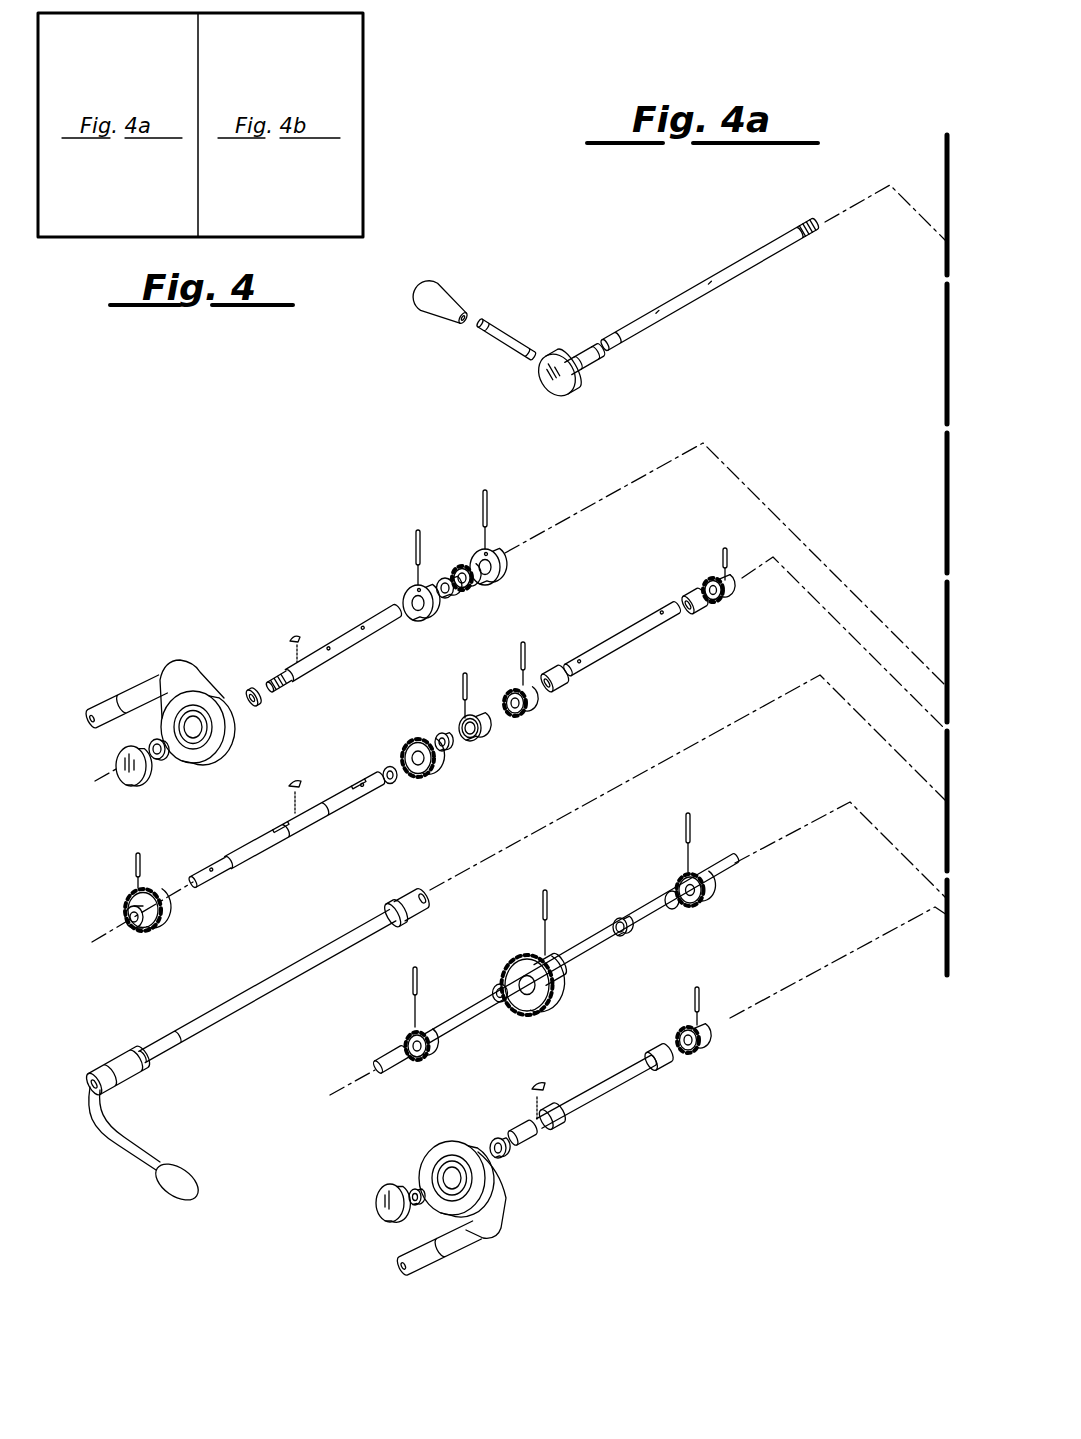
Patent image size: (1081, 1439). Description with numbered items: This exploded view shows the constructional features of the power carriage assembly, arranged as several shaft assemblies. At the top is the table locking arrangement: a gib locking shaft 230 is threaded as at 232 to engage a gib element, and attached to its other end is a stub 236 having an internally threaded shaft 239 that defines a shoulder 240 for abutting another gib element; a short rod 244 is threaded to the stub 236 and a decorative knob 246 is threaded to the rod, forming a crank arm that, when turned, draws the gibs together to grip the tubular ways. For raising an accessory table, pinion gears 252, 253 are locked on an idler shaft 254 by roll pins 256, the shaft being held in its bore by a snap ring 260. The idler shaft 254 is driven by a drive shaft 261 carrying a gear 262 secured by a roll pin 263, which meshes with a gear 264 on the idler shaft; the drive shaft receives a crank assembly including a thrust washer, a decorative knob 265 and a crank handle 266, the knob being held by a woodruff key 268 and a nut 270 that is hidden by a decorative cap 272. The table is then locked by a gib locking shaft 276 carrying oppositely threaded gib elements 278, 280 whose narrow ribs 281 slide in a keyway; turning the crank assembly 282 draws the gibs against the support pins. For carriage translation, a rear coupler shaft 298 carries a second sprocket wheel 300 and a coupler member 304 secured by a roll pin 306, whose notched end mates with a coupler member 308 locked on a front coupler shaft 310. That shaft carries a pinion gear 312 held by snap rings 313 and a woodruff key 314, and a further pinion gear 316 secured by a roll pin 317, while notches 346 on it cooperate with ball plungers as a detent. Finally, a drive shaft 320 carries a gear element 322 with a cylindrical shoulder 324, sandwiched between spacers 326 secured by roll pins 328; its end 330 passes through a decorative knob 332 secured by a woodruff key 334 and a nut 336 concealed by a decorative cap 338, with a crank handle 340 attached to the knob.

In FIG. 4A, the gib locking shaft 230 is at (712, 282).
In FIG. 4A, the threaded portion 232 is at (815, 226).
In FIG. 4A, the stub 236 is at (578, 397).
In FIG. 4A, the internally threaded shaft 239 is at (583, 352).
In FIG. 4A, the shoulder 240 is at (602, 360).
In FIG. 4A, the short rod 244 is at (510, 330).
In FIG. 4A, the decorative knob 246 is at (447, 290).
In FIG. 4, the pinion gear 252 is at (404, 1030).
In FIG. 4, the pinion gear 253 is at (707, 906).
In FIG. 4, the idler shaft 254 is at (592, 937).
In FIG. 4, the roll pins 256 is at (693, 825).
In FIG. 4, the snap ring 260 is at (627, 937).
In FIG. 4, the drive shaft 261 is at (618, 1092).
In FIG. 4, the gear 262 is at (698, 1060).
In FIG. 4, the roll pin 263 is at (703, 997).
In FIG. 4, the gear / thrust washer 264 is at (508, 954).
In FIG. 4, the knob 265 is at (490, 1186).
In FIG. 4, the crank handle 266 is at (441, 1262).
In FIG. 4, the woodruff key 268 is at (540, 1080).
In FIG. 4, the nut 270 is at (414, 1188).
In FIG. 4, the decorative cap 272 is at (379, 1196).
In FIG. 4, the gib locking shaft 276 is at (290, 967).
In FIG. 4, the gib element 278 is at (122, 1052).
In FIG. 4, the gib element 280 is at (408, 896).
In FIG. 4, the narrow rib 281 is at (270, 970).
In FIG. 4, the crank assembly 282 is at (138, 1147).
In FIG. 4, the rear coupler shaft 298 is at (650, 633).
In FIG. 4, the second sprocket wheel 300 is at (725, 606).
In FIG. 4, the coupler member 304 is at (528, 720).
In FIG. 4, the roll pin 306 is at (526, 645).
In FIG. 4, the mating coupler member 308 is at (480, 742).
In FIG. 4, the front coupler shaft 310 is at (368, 793).
In FIG. 4, the pinion gear 312 is at (430, 777).
In FIG. 4, the snap rings 313 is at (440, 733).
In FIG. 4, the woodruff key 314 is at (296, 777).
In FIG. 4, the pinion gear 316 is at (126, 895).
In FIG. 4, the roll pin 317 is at (133, 858).
In FIG. 4, the drive shaft 320 is at (298, 678).
In FIG. 4, the gear element 322 is at (458, 565).
In FIG. 4, the cylindrical shoulder 324 is at (447, 600).
In FIG. 4, the spacers 326 is at (505, 566).
In FIG. 4, the roll pins 328 is at (413, 540).
In FIG. 4, the shaft end 330 is at (250, 688).
In FIG. 4, the decorative knob 332 is at (205, 676).
In FIG. 4, the woodruff key 334 is at (295, 634).
In FIG. 4, the nut 336 is at (162, 761).
In FIG. 4, the decorative cap 338 is at (125, 768).
In FIG. 4, the crank handle 340 is at (122, 695).
In FIG. 4, the notches 346 is at (337, 818).